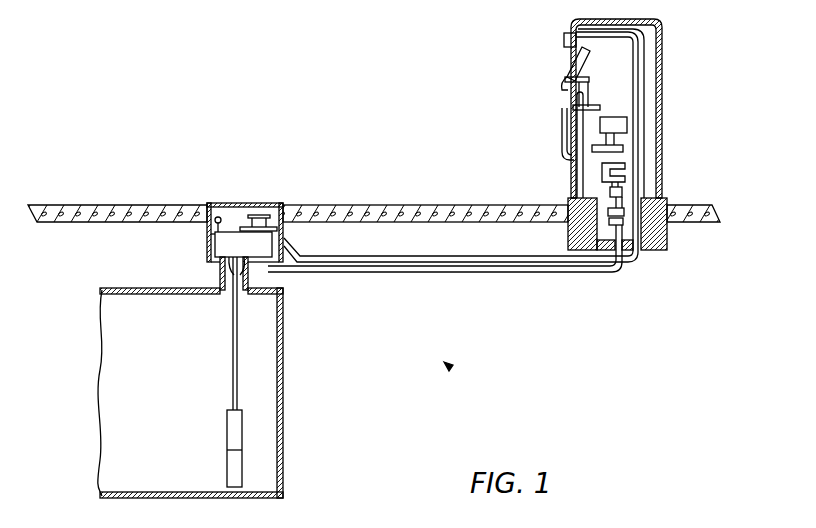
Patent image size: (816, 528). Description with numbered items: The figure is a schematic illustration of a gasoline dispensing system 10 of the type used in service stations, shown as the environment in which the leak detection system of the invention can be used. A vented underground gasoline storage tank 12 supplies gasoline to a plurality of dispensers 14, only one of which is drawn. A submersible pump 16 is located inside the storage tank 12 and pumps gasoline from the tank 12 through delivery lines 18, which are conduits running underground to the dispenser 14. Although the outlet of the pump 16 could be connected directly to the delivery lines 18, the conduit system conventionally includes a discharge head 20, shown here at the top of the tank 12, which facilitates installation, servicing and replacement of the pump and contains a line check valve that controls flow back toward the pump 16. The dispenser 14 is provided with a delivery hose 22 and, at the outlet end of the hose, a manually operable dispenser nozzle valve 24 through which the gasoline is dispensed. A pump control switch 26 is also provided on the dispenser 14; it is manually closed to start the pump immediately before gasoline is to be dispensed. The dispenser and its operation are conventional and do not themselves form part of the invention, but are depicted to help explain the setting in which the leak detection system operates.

The dispensing system 10 is at (448, 367).
The underground gasoline storage tank 12 is at (283, 358).
The dispenser 14 is at (663, 130).
The submersible pump 16 is at (233, 467).
The delivery lines 18 is at (436, 264).
The discharge head 20 is at (212, 236).
The delivery hose 22 is at (572, 155).
The dispenser nozzle valve 24 is at (563, 82).
The pump control switch 26 is at (578, 111).